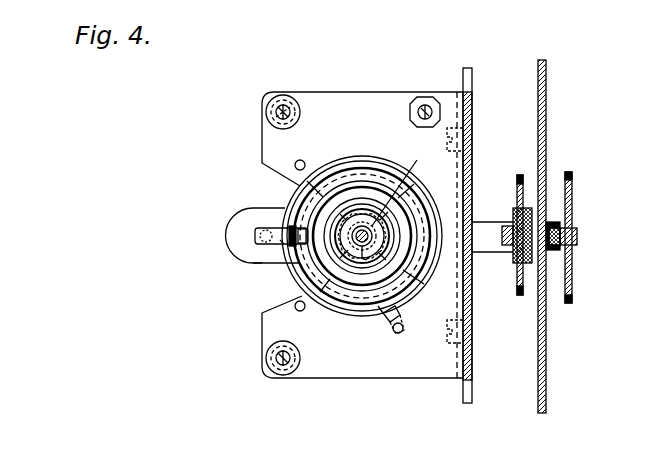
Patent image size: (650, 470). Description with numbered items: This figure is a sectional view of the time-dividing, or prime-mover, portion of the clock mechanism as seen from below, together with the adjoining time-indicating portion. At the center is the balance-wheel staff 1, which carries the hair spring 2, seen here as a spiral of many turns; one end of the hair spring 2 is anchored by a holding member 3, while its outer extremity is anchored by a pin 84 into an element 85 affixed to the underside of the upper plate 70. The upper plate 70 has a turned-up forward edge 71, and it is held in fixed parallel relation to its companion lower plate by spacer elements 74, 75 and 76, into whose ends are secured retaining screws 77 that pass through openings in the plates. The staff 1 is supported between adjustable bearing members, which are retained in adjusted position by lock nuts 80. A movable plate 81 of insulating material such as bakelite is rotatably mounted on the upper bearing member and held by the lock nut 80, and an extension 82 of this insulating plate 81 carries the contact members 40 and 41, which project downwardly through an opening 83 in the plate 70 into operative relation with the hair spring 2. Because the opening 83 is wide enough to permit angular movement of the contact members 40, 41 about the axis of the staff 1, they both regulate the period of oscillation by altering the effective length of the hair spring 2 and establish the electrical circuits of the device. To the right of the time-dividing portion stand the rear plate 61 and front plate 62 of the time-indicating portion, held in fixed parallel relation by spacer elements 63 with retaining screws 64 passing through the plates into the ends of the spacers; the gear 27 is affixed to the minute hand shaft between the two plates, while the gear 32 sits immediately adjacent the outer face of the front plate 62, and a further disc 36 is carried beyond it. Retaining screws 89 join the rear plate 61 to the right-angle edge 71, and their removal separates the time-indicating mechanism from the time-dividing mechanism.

The balance-wheel staff 1 is at (381, 201).
The hair spring 2 is at (344, 160).
The holding member 3 is at (400, 316).
The gear 27 is at (518, 278).
The small gear wheel 32 is at (556, 228).
The disc 36 is at (573, 282).
The contact member 40 is at (276, 228).
The contact member 41 is at (292, 262).
The rear plate 61 is at (470, 70).
The front plate 62 is at (547, 63).
The spacer element 63 is at (492, 222).
The retaining screw 64 is at (535, 262).
The upper plate 70 is at (358, 92).
The turned-up forward edge 71 is at (452, 100).
The spacer element 74 is at (278, 99).
The spacer element 75 is at (292, 372).
The spacer element 76 is at (418, 97).
The retaining screw 77 is at (296, 100).
The lock nut 80 is at (400, 200).
The movable plate 81 is at (228, 233).
The extension 82 is at (252, 262).
The opening 83 is at (262, 178).
The pin 84 is at (384, 326).
The element 85 is at (402, 334).
The retaining screw 89 is at (468, 129).